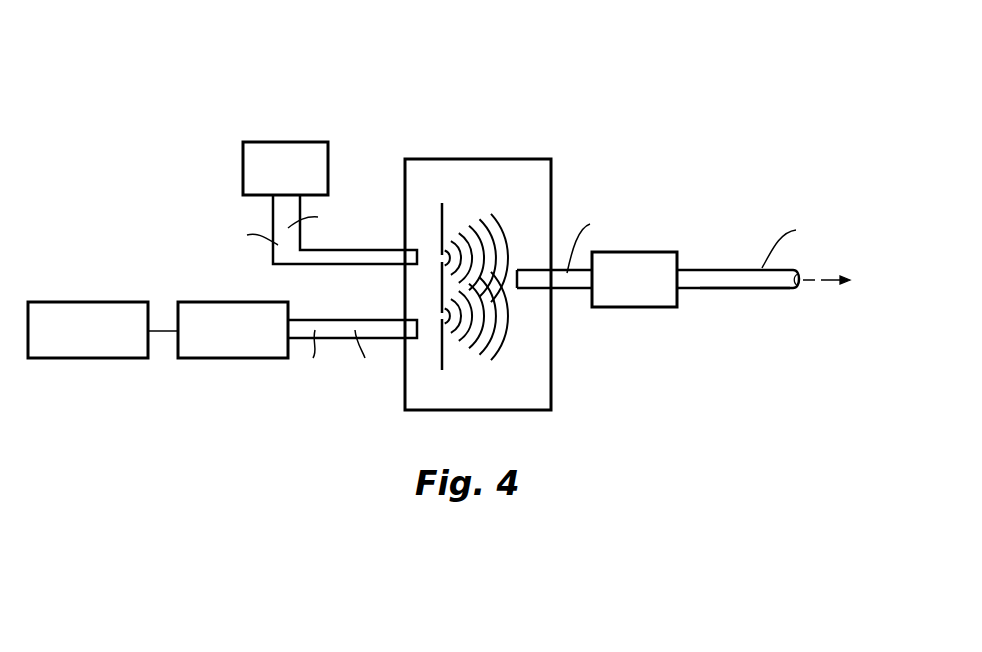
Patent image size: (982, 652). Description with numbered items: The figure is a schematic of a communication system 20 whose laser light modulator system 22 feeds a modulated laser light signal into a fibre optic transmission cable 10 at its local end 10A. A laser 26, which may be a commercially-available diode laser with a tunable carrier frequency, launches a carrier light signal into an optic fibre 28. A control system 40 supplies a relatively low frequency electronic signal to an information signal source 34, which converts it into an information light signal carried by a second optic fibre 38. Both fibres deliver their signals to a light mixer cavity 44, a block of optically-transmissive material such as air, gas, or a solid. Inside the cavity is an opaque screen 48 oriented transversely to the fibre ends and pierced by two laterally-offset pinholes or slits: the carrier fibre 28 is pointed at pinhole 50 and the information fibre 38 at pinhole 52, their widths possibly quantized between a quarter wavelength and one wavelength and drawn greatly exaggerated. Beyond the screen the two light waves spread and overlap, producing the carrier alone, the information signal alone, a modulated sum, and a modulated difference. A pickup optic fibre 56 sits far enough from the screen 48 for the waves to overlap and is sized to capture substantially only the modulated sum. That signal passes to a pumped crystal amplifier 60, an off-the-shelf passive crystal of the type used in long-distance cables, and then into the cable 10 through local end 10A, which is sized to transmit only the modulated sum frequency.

The communication system 20 is at (505, 82).
The laser light modulator system 22 is at (393, 117).
The laser 26 is at (278, 148).
The optic fibre 28 is at (347, 262).
The optic fibre 38 is at (330, 327).
The information signal source 34 is at (233, 360).
The control system 40 is at (87, 360).
The light mixer cavity 44 is at (440, 158).
The screen 48 is at (446, 214).
The pinhole 50 is at (440, 256).
The pinhole 52 is at (440, 318).
The pickup optic fibre 56 is at (565, 284).
The pumped crystal amplifier 60 is at (647, 300).
The fibre optic transmission cable 10 is at (697, 268).
The local end 10A is at (728, 281).